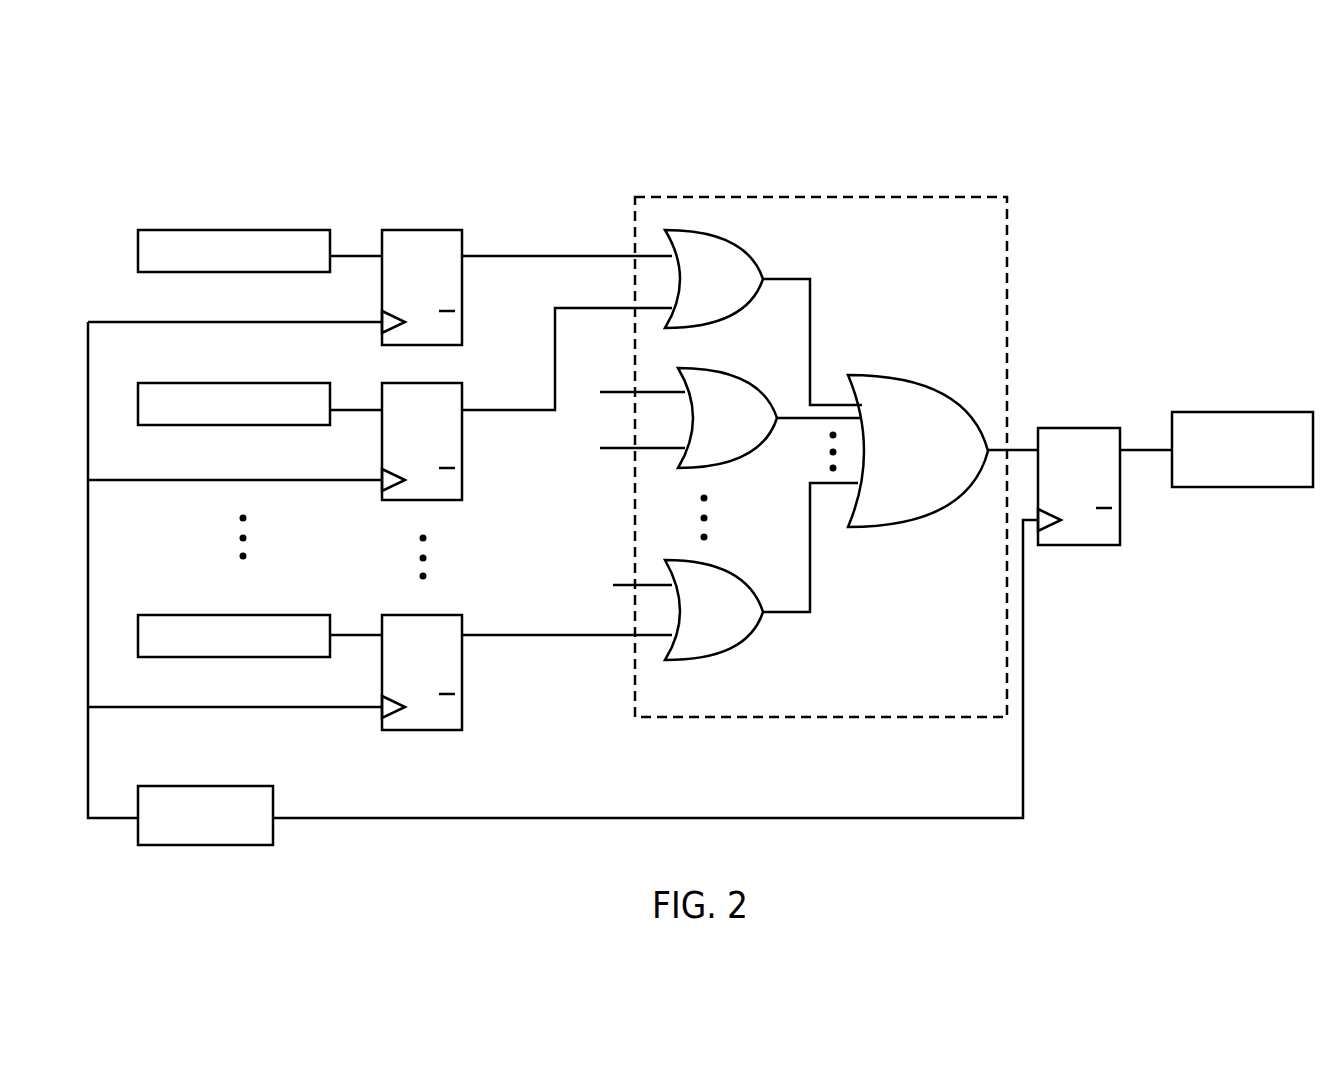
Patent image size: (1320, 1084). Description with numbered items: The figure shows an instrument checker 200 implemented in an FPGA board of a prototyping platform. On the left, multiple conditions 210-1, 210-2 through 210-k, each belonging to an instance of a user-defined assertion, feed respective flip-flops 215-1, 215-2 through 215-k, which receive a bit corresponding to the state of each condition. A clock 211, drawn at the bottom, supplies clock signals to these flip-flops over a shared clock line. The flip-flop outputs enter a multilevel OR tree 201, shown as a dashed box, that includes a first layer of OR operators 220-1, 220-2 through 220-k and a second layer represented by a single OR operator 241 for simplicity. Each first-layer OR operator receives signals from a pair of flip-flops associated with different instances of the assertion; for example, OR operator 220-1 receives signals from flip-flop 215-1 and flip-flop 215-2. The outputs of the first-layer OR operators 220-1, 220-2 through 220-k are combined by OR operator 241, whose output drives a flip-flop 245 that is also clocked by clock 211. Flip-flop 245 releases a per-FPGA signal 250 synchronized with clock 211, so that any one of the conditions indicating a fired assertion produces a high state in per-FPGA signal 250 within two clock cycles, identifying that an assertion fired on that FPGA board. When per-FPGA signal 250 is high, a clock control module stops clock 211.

The instrument checker 200 is at (288, 120).
The condition 210-1 is at (268, 268).
The condition 210-2 is at (268, 422).
The condition 210-k is at (273, 652).
The clock 211 is at (230, 831).
The flip-flop 215-1 is at (438, 230).
The flip-flop 215-2 is at (462, 480).
The flip-flop 215-k is at (462, 707).
The multilevel OR tree 201 is at (845, 697).
The OR operator 220-1 is at (758, 293).
The OR operator 220-2 is at (771, 432).
The OR operator 220-k is at (758, 625).
The OR operator 241 is at (943, 465).
The flip-flop 245 is at (1085, 428).
The per-FPGA signal 250 is at (1267, 465).